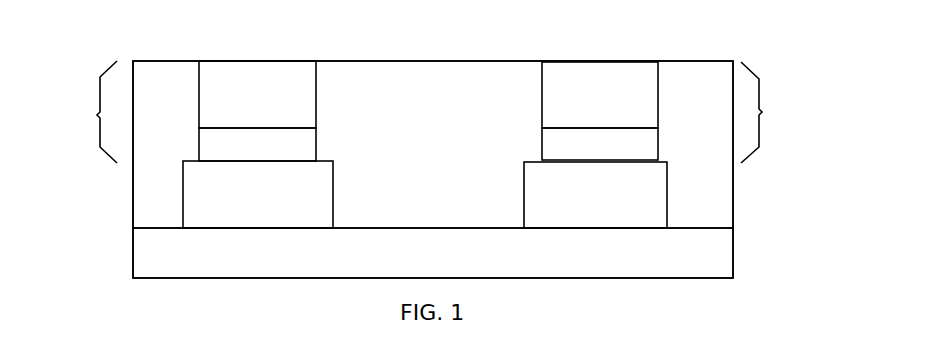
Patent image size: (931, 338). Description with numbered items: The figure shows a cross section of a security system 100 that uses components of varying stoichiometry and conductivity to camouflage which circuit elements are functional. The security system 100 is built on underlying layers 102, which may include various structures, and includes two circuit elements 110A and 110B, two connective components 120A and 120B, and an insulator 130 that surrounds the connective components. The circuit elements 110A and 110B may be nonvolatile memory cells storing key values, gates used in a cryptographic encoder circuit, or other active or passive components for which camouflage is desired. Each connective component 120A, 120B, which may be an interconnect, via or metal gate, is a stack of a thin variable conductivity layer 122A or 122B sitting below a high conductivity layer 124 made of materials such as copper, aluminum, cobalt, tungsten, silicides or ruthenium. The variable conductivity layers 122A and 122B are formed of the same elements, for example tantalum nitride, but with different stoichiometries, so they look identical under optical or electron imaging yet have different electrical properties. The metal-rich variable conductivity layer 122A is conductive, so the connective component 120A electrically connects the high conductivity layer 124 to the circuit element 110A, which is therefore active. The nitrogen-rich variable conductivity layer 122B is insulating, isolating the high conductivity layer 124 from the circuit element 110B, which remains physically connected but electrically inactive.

The security system 100 is at (452, 24).
The underlying layers 102 is at (433, 253).
The circuit element 110A is at (258, 194).
The circuit element 110B is at (595, 195).
The connective component 120A is at (96, 115).
The connective component 120B is at (763, 112).
The variable conductivity layer 122A is at (257, 144).
The variable conductivity layer 122B is at (600, 144).
The high conductivity layer 124 is at (428, 94).
The insulator 130 is at (433, 144).